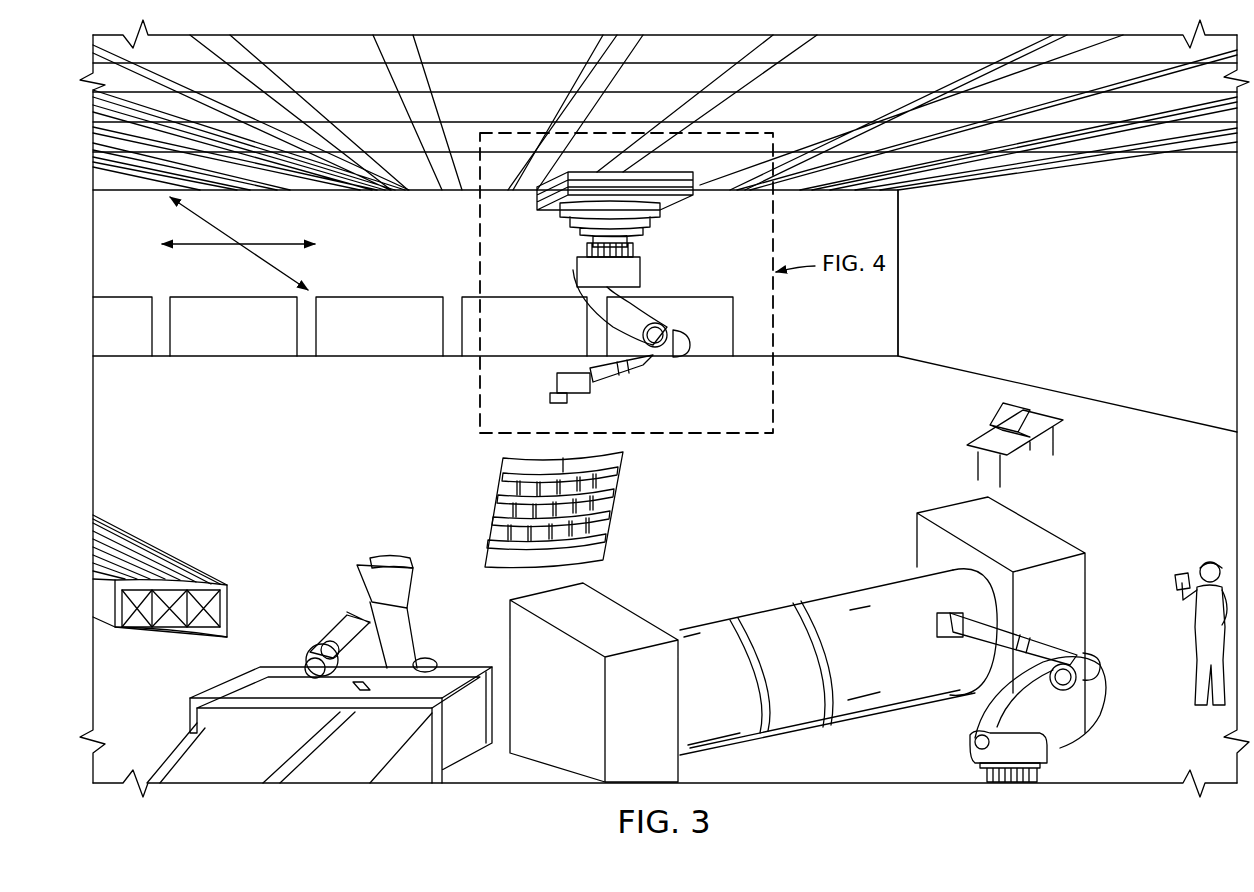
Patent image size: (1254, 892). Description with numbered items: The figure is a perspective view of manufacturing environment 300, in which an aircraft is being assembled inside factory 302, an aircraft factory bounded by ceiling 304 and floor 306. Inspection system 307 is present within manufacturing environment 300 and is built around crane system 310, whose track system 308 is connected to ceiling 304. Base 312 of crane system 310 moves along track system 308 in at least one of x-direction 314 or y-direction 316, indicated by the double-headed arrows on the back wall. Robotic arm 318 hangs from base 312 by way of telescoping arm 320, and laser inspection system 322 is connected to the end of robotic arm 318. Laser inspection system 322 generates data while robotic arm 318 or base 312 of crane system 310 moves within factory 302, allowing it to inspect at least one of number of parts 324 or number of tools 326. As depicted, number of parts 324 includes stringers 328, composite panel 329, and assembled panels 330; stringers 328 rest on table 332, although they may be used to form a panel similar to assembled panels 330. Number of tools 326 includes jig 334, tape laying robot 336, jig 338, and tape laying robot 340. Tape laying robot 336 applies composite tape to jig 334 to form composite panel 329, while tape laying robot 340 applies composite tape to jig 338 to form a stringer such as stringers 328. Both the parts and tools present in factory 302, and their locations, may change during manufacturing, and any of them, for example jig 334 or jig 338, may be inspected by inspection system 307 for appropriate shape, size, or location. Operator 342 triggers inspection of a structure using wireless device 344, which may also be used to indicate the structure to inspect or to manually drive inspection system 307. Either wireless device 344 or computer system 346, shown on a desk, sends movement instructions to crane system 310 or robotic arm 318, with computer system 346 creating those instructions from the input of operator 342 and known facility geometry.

The manufacturing environment 300 is at (795, 805).
The factory 302 is at (498, 785).
The ceiling 304 is at (483, 92).
The floor 306 is at (1145, 702).
The inspection system 307 is at (422, 277).
The track system 308 is at (577, 78).
The crane system 310 is at (553, 120).
The base 312 is at (672, 220).
The x-direction 314 is at (255, 256).
The y-direction 316 is at (270, 244).
The robotic arm 318 is at (670, 373).
The telescoping arm 320 is at (550, 228).
The laser inspection system 322 is at (558, 403).
The number of parts 324 is at (275, 440).
The number of tools 326 is at (1097, 467).
The stringers 328 is at (152, 527).
The composite panel 329 is at (760, 598).
The assembled panels 330 is at (630, 497).
The table 332 is at (233, 605).
The jig 334 is at (690, 623).
The tape laying robot 336 is at (1037, 628).
The jig 338 is at (272, 763).
The tape laying robot 340 is at (398, 552).
The operator 342 is at (1192, 553).
The wireless device 344 is at (1167, 577).
The computer system 346 is at (980, 425).